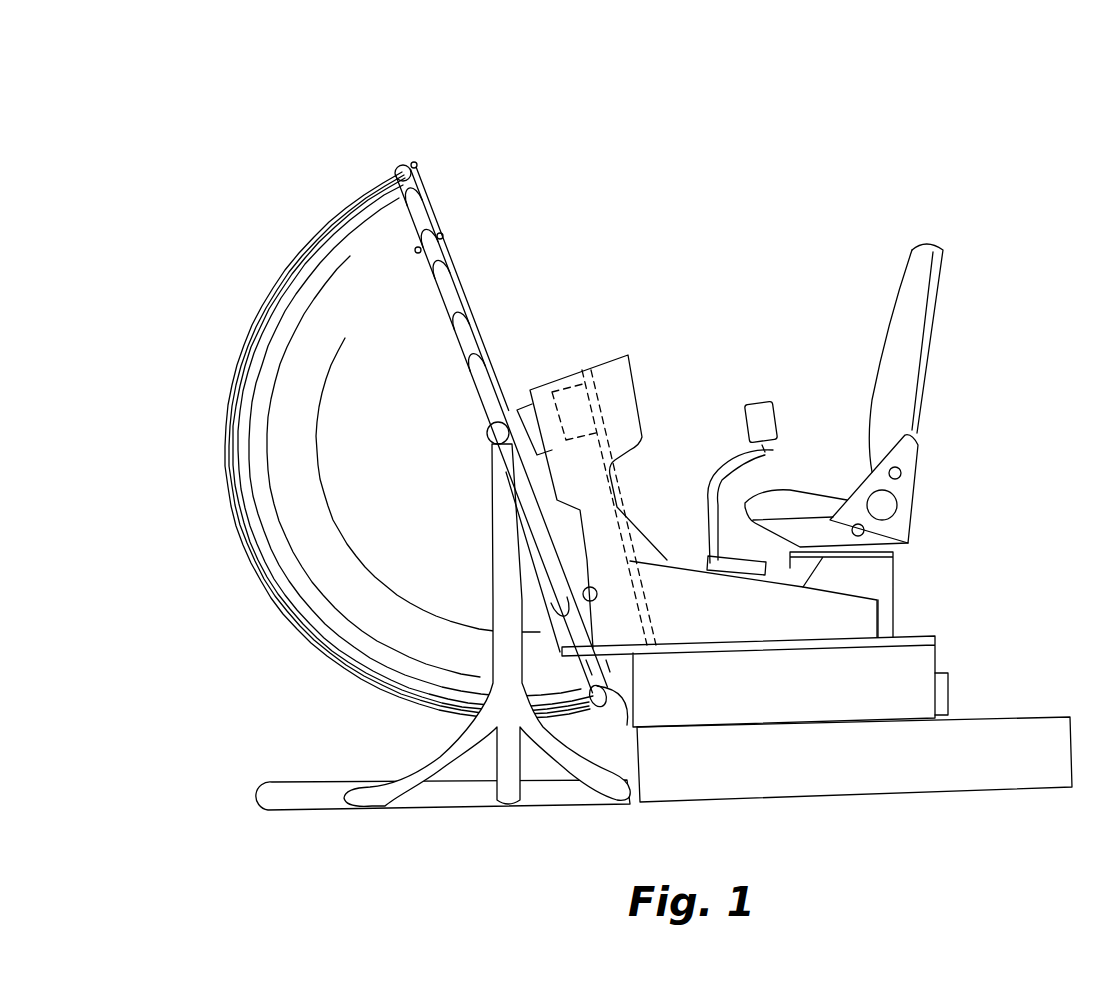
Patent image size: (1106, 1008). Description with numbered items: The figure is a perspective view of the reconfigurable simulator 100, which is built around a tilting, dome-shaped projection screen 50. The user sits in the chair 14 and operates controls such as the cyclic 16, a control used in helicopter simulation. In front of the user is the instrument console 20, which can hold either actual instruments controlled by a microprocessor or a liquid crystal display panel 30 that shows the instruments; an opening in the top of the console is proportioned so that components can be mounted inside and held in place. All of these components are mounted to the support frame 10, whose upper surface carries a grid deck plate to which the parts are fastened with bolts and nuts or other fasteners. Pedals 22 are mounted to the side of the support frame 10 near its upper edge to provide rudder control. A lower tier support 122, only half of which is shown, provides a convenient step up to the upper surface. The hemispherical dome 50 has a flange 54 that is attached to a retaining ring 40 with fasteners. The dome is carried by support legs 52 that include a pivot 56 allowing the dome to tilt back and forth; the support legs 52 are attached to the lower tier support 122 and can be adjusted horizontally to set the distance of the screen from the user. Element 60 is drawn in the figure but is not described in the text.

The simulator 100 is at (714, 131).
The support frame 10 is at (805, 702).
The lower tier support 122 is at (890, 772).
The chair 14 is at (905, 258).
The cyclic 16 is at (762, 395).
The instrument console 20 is at (752, 618).
The pedals 22 is at (628, 698).
The liquid crystal display (LCD) panel 30 is at (640, 395).
The retaining ring 40 is at (440, 297).
The dome-shaped projection screen 50 is at (423, 462).
The support legs 52 is at (424, 770).
The flange 54 is at (433, 186).
The pivot 56 is at (500, 420).
The drive element 60 is at (553, 390).